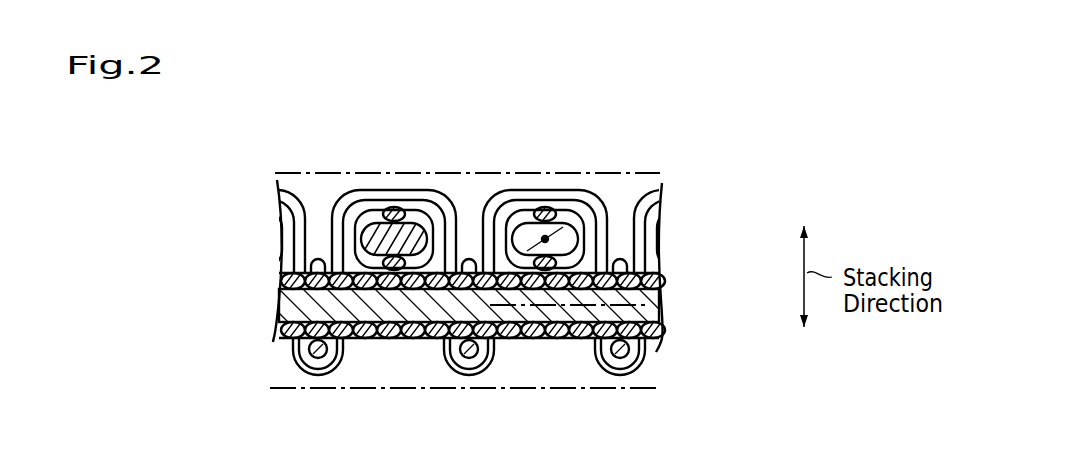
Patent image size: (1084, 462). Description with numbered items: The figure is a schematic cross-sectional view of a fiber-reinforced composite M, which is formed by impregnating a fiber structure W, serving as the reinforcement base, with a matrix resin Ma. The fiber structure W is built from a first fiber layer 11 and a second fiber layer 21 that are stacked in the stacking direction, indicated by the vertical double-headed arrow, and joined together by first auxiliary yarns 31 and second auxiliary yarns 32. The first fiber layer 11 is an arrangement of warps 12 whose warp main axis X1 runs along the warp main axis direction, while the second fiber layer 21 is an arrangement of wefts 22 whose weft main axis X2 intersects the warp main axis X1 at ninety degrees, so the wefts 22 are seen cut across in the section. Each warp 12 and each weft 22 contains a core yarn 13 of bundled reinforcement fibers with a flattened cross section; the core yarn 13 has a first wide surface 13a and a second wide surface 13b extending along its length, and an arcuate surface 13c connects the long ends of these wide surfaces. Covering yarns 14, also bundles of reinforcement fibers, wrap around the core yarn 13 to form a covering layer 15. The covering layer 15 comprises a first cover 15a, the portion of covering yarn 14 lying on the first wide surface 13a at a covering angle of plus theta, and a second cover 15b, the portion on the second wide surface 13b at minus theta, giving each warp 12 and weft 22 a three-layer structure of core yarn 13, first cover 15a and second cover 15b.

The first fiber layer 11 is at (667, 225).
The warp 12 is at (428, 225).
The core yarn 13 is at (337, 198).
The first wide surface 13a is at (373, 208).
The second wide surface 13b is at (292, 342).
The arcuate surface 13c is at (365, 233).
The covering yarn 14 is at (340, 213).
The covering layer 15 is at (445, 213).
The first cover 15a is at (392, 208).
The second cover 15b is at (358, 342).
The second fiber layer 21 is at (672, 300).
The weft 22 is at (503, 343).
The first auxiliary yarn 31 is at (318, 353).
The second auxiliary yarn 32 is at (279, 194).
The fiber-reinforced composite M is at (682, 195).
The matrix resin Ma is at (632, 170).
The fiber structure W is at (560, 351).
The warp main axis X1 is at (566, 222).
The weft main axis X2 is at (650, 307).